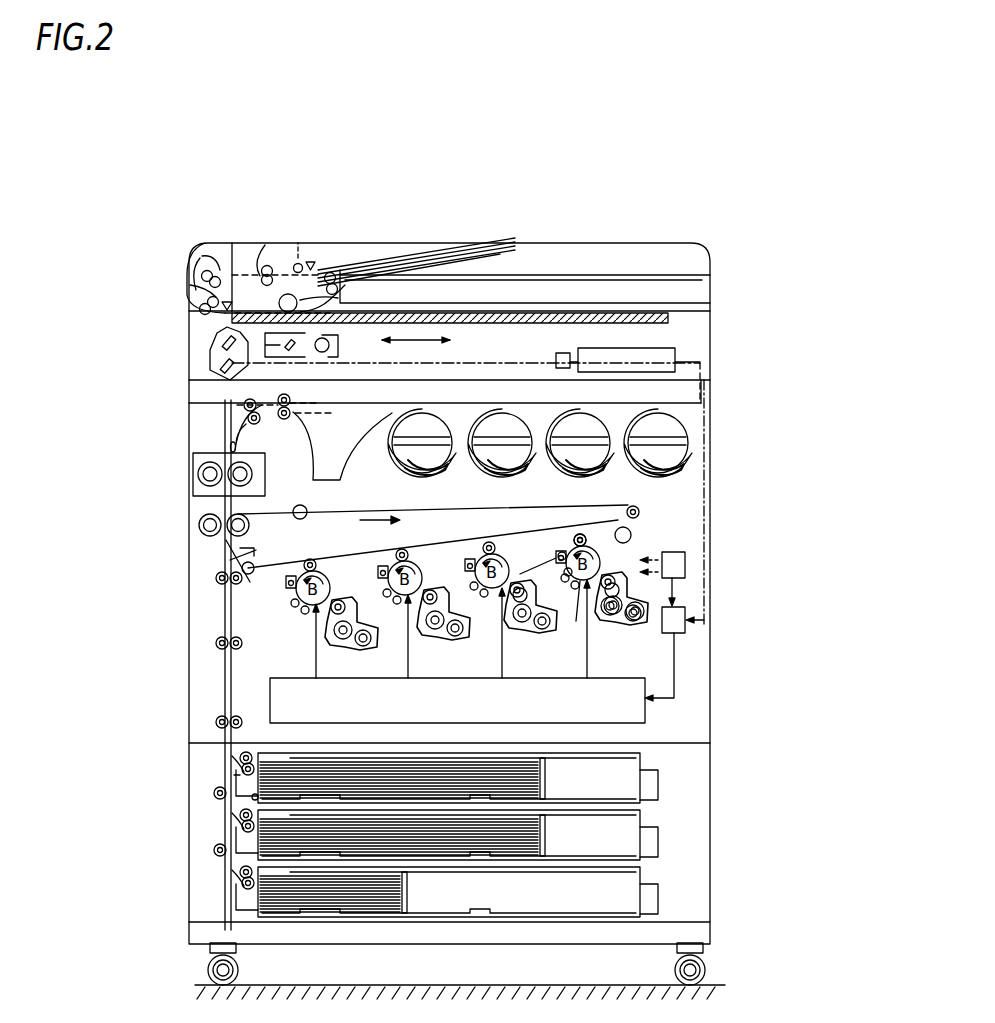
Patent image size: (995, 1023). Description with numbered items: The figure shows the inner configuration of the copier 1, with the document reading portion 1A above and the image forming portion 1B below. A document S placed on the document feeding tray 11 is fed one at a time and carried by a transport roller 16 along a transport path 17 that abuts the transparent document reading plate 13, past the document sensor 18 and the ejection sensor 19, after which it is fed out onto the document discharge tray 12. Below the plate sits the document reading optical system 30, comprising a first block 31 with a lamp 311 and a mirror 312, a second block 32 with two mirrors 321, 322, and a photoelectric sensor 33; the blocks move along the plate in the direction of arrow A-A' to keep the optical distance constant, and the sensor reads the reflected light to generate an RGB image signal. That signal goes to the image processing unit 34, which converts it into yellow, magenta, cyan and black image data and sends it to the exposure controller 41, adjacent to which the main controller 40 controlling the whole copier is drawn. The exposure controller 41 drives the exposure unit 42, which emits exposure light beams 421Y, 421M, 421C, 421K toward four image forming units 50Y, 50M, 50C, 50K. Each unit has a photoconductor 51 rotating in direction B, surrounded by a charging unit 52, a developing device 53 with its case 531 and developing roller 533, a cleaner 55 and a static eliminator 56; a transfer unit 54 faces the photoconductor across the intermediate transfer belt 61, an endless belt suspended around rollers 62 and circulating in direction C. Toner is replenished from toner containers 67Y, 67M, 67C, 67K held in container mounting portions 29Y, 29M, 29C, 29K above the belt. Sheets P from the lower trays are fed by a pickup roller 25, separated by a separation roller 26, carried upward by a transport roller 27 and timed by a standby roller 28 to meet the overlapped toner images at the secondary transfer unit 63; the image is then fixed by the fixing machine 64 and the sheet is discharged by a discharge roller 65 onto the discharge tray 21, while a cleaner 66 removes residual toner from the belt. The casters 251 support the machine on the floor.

The copier 1 is at (713, 200).
The document reading portion 1A is at (721, 273).
The image forming portion 1B is at (721, 490).
The document feeding tray 11 is at (506, 246).
The document discharge tray 12 is at (574, 302).
The document reading plate 13 is at (640, 312).
The transport roller 16 is at (199, 302).
The transport path 17 is at (298, 243).
The document sensor 18 is at (314, 261).
The document ejection sensor 19 is at (230, 301).
The discharge tray 21 is at (707, 397).
The pickup roller 25 is at (258, 766).
The separation roller 26 is at (232, 769).
The transport roller 27 is at (214, 644).
The standby roller 28 is at (214, 578).
The container mounting portion 29K is at (416, 472).
The container mounting portion 29C is at (496, 472).
The container mounting portion 29M is at (586, 472).
The container mounting portion 29Y is at (660, 464).
The document reading optical system 30 is at (199, 370).
The first block 31 is at (333, 346).
The lamp 311 is at (327, 352).
The mirror 312 is at (298, 350).
The second block 32 is at (206, 350).
The mirror 321 is at (224, 340).
The mirror 322 is at (228, 368).
The photoelectric sensor 33 is at (556, 353).
The image processing unit 34 is at (672, 352).
The main controller 40 is at (686, 564).
The exposure controller 41 is at (686, 630).
The exposure unit 42 is at (645, 722).
The exposure light beam 421K is at (316, 666).
The exposure light beam 421C is at (408, 666).
The exposure light beam 421M is at (502, 666).
The exposure light beam 421Y is at (587, 666).
The image forming unit 50K is at (326, 582).
The image forming unit 50C is at (412, 570).
The image forming unit 50M is at (470, 540).
The image forming unit 50Y is at (556, 538).
The photoconductor 51 is at (577, 612).
The charging unit 52 is at (533, 596).
The developing device 53 is at (589, 552).
The transfer unit 54 is at (580, 541).
The cleaner 55 is at (544, 558).
The static eliminator 56 is at (556, 574).
The case 531 is at (622, 588).
The developing roller 533 is at (620, 574).
The intermediate transfer belt 61 is at (384, 506).
The roller 62 is at (636, 509).
The transfer unit 63 is at (196, 525).
The fixing machine 64 is at (266, 478).
The discharge roller 65 is at (286, 420).
The cleaner 66 is at (632, 536).
The toner container 67K is at (424, 420).
The toner container 67C is at (506, 420).
The toner container 67M is at (584, 420).
The toner container 67Y is at (652, 420).
The caster 251 is at (240, 972).
The sheet P is at (544, 772).
The document S is at (440, 244).